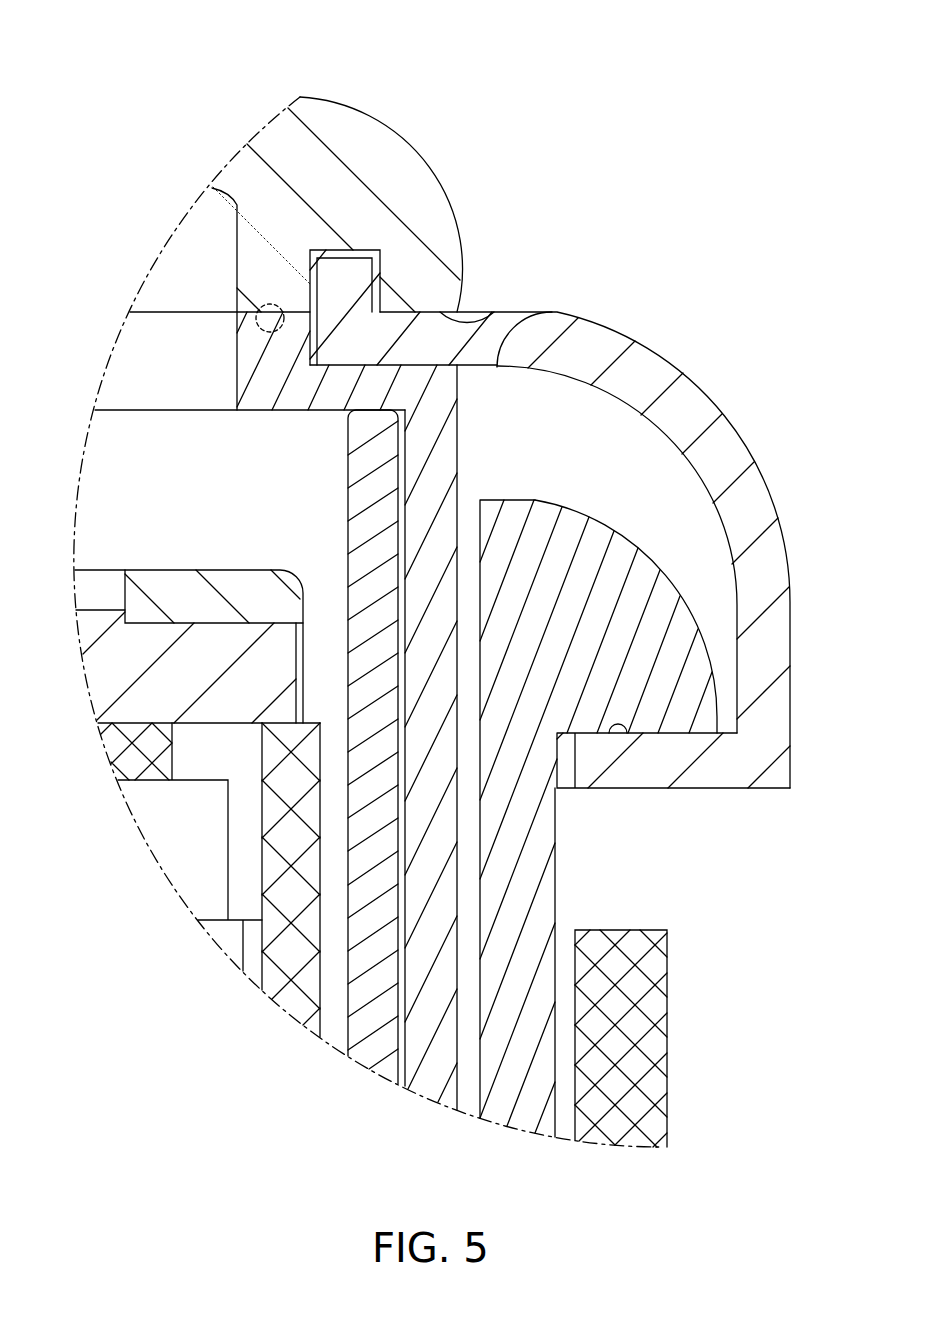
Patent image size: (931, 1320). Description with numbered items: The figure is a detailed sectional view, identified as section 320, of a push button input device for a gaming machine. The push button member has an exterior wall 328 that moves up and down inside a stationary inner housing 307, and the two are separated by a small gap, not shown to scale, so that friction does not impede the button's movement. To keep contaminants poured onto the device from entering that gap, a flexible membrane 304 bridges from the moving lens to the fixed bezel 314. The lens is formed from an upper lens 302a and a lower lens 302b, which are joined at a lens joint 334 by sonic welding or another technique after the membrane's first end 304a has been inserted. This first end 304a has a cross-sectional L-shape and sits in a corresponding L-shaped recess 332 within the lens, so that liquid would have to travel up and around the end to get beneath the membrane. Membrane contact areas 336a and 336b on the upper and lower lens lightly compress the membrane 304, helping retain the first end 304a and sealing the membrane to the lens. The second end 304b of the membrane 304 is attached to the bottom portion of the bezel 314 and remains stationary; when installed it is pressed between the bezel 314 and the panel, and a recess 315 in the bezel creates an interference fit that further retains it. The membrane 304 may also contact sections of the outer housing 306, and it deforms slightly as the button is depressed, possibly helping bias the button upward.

The section 320 is at (198, 86).
The upper lens 302a is at (437, 183).
The lower lens 302b is at (462, 432).
The membrane 304 is at (706, 423).
The first end of the membrane 304a is at (343, 288).
The second end of the membrane 304b is at (730, 760).
The outer housing 306 is at (642, 1030).
The inner housing 307 is at (530, 872).
The bezel 314 is at (712, 650).
The recess 315 is at (618, 727).
The push button member exterior wall 328 is at (420, 1033).
The L-shaped recess 332 is at (313, 283).
The lens joint 334 is at (238, 334).
The membrane contact area on upper lens 336a is at (487, 313).
The membrane contact area on lower lens 336b is at (527, 312).